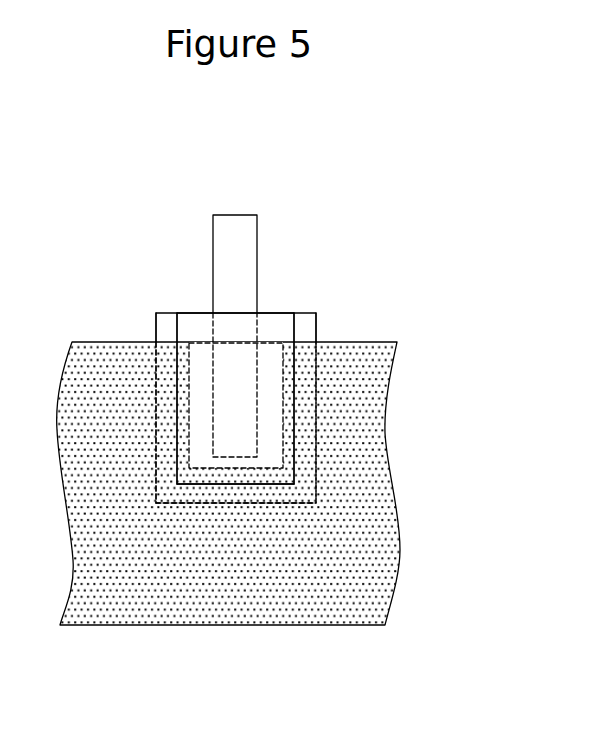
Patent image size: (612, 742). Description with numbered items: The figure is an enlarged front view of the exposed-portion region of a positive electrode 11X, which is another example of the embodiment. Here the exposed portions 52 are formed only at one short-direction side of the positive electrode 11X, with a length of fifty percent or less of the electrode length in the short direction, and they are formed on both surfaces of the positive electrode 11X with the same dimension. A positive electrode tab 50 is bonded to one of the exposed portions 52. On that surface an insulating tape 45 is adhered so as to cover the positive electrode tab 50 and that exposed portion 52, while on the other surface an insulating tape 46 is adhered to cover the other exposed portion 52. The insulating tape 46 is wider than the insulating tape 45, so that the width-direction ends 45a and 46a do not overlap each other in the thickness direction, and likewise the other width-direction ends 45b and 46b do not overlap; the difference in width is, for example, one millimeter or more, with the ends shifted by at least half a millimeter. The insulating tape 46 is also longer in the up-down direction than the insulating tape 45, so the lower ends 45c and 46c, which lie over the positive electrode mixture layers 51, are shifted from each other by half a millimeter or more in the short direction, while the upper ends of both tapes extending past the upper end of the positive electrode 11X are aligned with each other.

The positive electrode tab 50 is at (233, 228).
The insulating tape 45 is at (271, 322).
The width-direction end of insulating tape 45a is at (313, 320).
The other width-direction end of insulating tape 45b is at (168, 320).
The lower end of insulating tape 45c is at (268, 484).
The insulating tape 46 is at (317, 320).
The width-direction end of insulating tape 46a is at (317, 330).
The other width-direction end of insulating tape 46b is at (156, 330).
The lower end of insulating tape 46c is at (233, 503).
The positive electrode mixture layer 51 is at (375, 465).
The exposed portion 52 is at (205, 484).
The positive electrode 11X is at (456, 357).